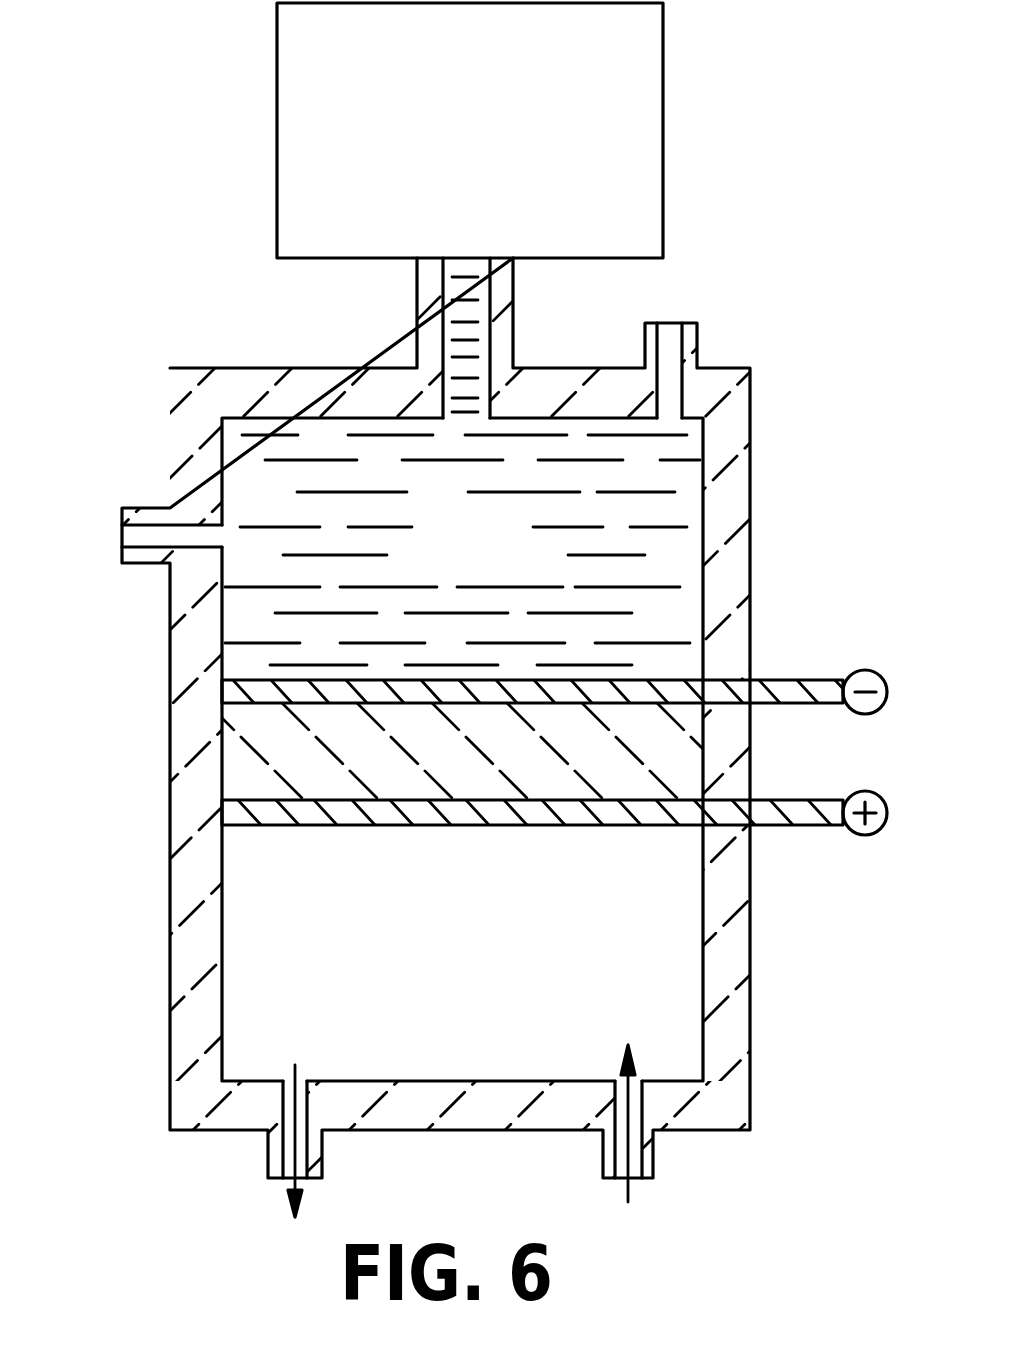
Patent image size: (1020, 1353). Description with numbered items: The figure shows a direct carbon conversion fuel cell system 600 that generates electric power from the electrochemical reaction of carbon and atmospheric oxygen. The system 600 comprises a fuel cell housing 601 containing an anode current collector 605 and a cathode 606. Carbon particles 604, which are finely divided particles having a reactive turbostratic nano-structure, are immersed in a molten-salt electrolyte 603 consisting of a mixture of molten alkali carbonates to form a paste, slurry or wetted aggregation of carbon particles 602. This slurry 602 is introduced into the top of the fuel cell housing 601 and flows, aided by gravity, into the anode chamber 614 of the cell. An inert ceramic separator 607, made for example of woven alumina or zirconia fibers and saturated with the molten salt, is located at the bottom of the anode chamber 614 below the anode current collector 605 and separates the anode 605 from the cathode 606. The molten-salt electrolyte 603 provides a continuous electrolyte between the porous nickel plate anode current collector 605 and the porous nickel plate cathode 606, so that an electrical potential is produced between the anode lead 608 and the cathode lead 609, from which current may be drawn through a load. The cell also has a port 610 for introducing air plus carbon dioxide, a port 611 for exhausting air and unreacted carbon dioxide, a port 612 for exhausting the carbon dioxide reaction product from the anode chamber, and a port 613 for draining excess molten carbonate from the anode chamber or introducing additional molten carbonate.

The fuel cell system 600 is at (757, 147).
The fuel cell housing 601 is at (752, 470).
The paste, slurry, or wetted aggregation of carbon particles 602 is at (522, 556).
The molten-salt electrolyte 603 is at (430, 61).
The carbon particles 604 is at (597, 61).
The anode current collector 605 is at (250, 686).
The cathode 606 is at (278, 828).
The inert ceramic separator 607 is at (245, 776).
The anode lead 608 is at (818, 680).
The cathode lead 609 is at (800, 830).
The port for introduction of air plus carbon dioxide 610 is at (655, 1155).
The port for exhaust of air and unreacted carbon dioxide 611 is at (265, 1158).
The port for exhaust of carbon dioxide reaction product 612 is at (697, 343).
The port for draining or introducing molten carbonate 613 is at (140, 508).
The anode chamber 614 is at (337, 418).